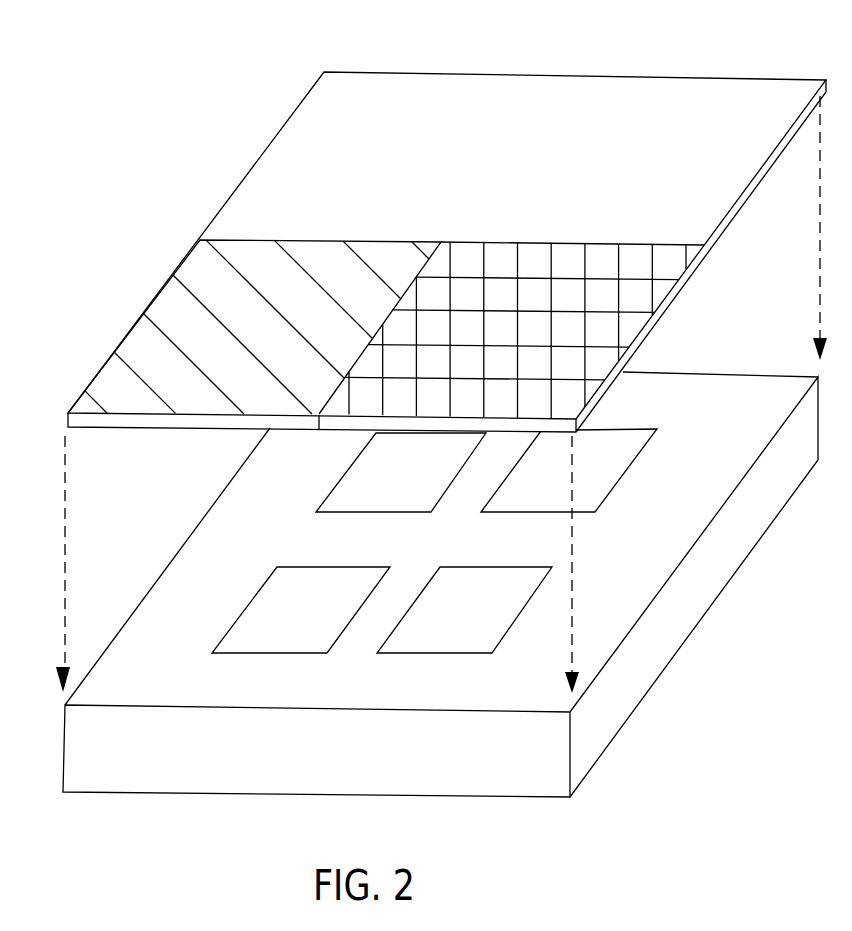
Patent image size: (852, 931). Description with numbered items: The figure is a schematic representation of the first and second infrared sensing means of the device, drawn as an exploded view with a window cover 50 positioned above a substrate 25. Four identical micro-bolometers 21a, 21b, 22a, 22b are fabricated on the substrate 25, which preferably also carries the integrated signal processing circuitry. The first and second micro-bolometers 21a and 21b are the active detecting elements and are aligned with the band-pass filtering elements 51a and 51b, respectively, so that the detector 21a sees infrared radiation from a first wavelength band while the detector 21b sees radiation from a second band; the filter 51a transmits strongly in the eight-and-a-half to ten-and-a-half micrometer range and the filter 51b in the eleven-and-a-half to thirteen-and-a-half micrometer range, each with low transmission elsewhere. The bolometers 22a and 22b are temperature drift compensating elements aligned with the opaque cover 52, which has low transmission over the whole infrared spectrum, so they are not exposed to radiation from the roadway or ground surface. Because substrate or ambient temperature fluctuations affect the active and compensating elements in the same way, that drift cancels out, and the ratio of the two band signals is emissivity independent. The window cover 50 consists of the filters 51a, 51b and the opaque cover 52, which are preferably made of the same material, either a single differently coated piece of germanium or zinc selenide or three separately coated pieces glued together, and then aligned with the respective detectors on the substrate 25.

The window cover 50 is at (540, 62).
The opaque cover 52 is at (305, 145).
The band-pass filtering element 51a is at (138, 357).
The band-pass filtering element 51b is at (640, 268).
The substrate 25 is at (155, 773).
The first micro-bolometer 21a is at (230, 630).
The second micro-bolometer 21b is at (500, 605).
The micro-bolometer 22a is at (346, 473).
The micro-bolometer 22b is at (607, 475).